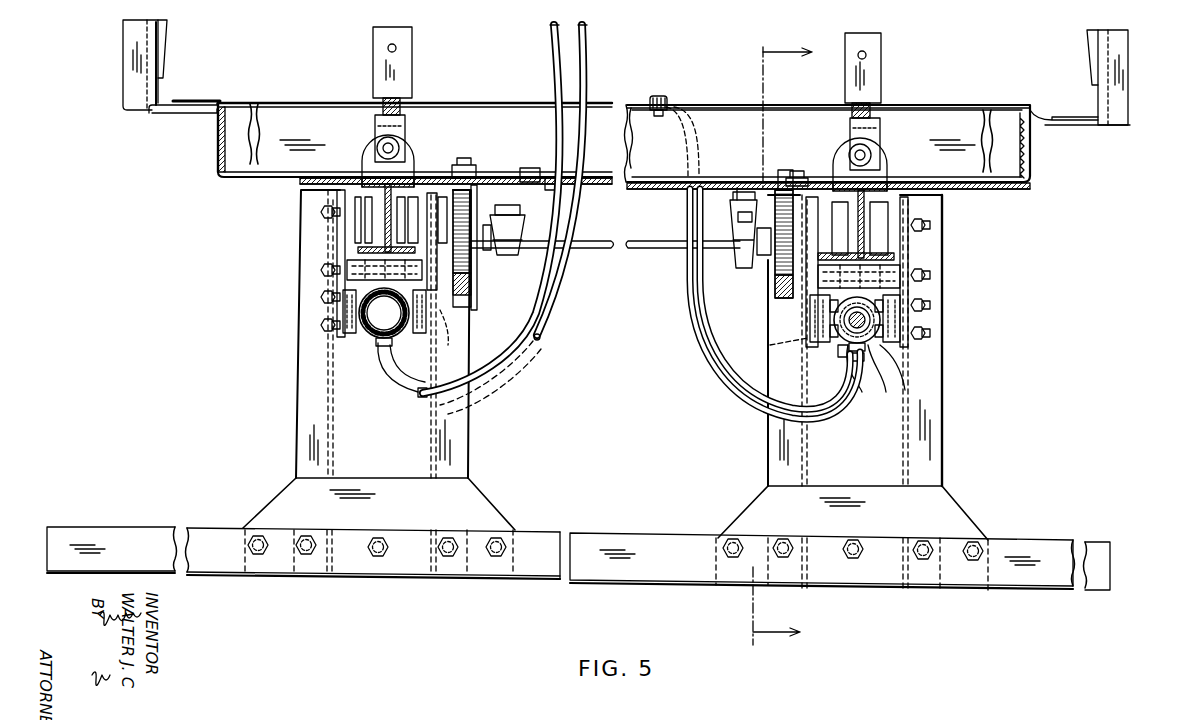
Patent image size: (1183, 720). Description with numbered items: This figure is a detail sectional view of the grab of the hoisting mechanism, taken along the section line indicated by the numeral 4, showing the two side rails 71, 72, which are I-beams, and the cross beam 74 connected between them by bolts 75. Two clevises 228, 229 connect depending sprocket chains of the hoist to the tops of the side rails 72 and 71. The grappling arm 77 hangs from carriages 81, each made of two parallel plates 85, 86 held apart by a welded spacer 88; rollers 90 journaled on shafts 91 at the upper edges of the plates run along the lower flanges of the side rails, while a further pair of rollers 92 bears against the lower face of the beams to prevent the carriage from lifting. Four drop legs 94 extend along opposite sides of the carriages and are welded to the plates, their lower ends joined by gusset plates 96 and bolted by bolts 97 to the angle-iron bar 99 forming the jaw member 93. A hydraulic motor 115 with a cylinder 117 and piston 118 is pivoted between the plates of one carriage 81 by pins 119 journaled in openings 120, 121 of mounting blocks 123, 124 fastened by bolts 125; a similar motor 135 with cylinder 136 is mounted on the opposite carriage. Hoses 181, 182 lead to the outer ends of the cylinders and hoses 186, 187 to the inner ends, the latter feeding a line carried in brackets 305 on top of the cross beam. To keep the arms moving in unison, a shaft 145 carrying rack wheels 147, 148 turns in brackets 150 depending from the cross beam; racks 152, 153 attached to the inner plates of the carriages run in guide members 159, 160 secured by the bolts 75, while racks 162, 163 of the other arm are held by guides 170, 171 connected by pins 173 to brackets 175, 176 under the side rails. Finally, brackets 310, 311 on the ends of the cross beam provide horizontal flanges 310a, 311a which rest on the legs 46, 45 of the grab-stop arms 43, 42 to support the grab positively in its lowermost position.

The section line 4- 4 is at (782, 344).
The arm of the grab stop 42 is at (1128, 76).
The arm of the grab stop 43 is at (128, 89).
The inwardly projecting flange or leg 45 is at (1082, 128).
The inwardly projecting flange or leg 46 is at (163, 114).
The side rail 71 is at (362, 197).
The side rail 72 is at (875, 192).
The cross beam 74 is at (743, 107).
The bolts 75 is at (472, 168).
The grappling arm 77 is at (957, 441).
The carriage 81 is at (326, 233).
The plate 85 is at (336, 242).
The plate 86 is at (402, 338).
The spacer 88 is at (345, 278).
The rollers 90 is at (345, 195).
The shafts 91 is at (322, 212).
The rollers 92 is at (358, 338).
The jaw member 93 is at (648, 526).
The drop legs 94 is at (303, 406).
The gusset plate 96 is at (478, 490).
The bolts 97 is at (300, 536).
The elongated bar 99 is at (625, 586).
The hydraulic motor 115 is at (866, 352).
The cylinder or housing 117 is at (880, 350).
The piston or plunger 118 is at (855, 362).
The pins or studs 119 is at (818, 345).
The opening 120 is at (790, 343).
The opening 121 is at (905, 347).
The mounting block 123 is at (838, 348).
The mounting block 124 is at (905, 365).
The bolts 125 is at (808, 330).
The hydraulic motor 135 is at (386, 345).
The cylinder or housing 136 is at (408, 378).
The shaft 145 is at (598, 240).
The rack wheel 147 is at (471, 282).
The rack wheel 148 is at (760, 250).
The brackets 150 is at (545, 178).
The rack 152 is at (522, 178).
The rack 153 is at (745, 190).
The guide member 159 is at (445, 182).
The guide member 160 is at (805, 188).
The rack 162 is at (477, 300).
The rack 163 is at (776, 292).
The guide 170 is at (482, 352).
The guide 171 is at (800, 310).
The pins 173 is at (468, 300).
The bracket 175 is at (497, 255).
The bracket 176 is at (780, 230).
The hose 181 is at (541, 332).
The hose 182 is at (712, 362).
The hose 186 is at (420, 399).
The hose 187 is at (730, 374).
The clevis 228 is at (377, 143).
The clevis 229 is at (880, 127).
The brackets 305 is at (662, 96).
The bracket 310 is at (218, 140).
The horizontally projecting flange 310a is at (192, 99).
The bracket 311 is at (1032, 160).
The horizontally projecting flange 311a is at (1043, 112).